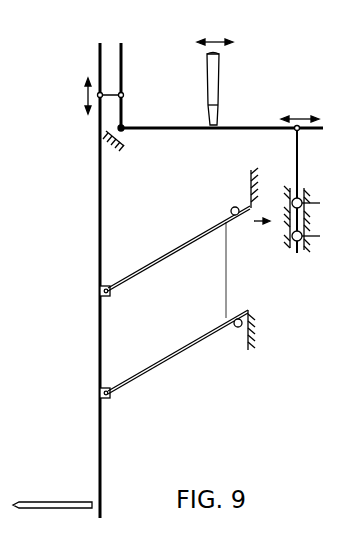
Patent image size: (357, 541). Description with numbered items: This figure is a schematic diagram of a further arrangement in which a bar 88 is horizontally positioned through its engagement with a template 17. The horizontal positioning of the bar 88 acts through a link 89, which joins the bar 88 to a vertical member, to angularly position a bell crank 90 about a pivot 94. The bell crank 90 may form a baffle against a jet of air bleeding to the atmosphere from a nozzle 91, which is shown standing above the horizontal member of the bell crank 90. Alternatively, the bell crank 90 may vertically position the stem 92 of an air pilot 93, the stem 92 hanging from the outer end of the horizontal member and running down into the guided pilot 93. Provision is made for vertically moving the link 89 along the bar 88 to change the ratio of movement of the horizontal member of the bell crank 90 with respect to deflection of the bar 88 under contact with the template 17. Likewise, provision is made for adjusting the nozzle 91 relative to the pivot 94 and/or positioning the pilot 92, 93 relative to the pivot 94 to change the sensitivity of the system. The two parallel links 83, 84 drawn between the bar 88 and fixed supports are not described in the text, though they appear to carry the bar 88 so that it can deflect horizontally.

The template 17 is at (53, 501).
The lower link 83 is at (145, 370).
The upper link 84 is at (147, 262).
The bar 88 is at (98, 225).
The link 89 is at (110, 94).
The bell crank 90 is at (148, 127).
The nozzle 91 is at (218, 95).
The stem 92 is at (295, 152).
The air pilot 93 is at (309, 283).
The pivot 94 is at (123, 125).